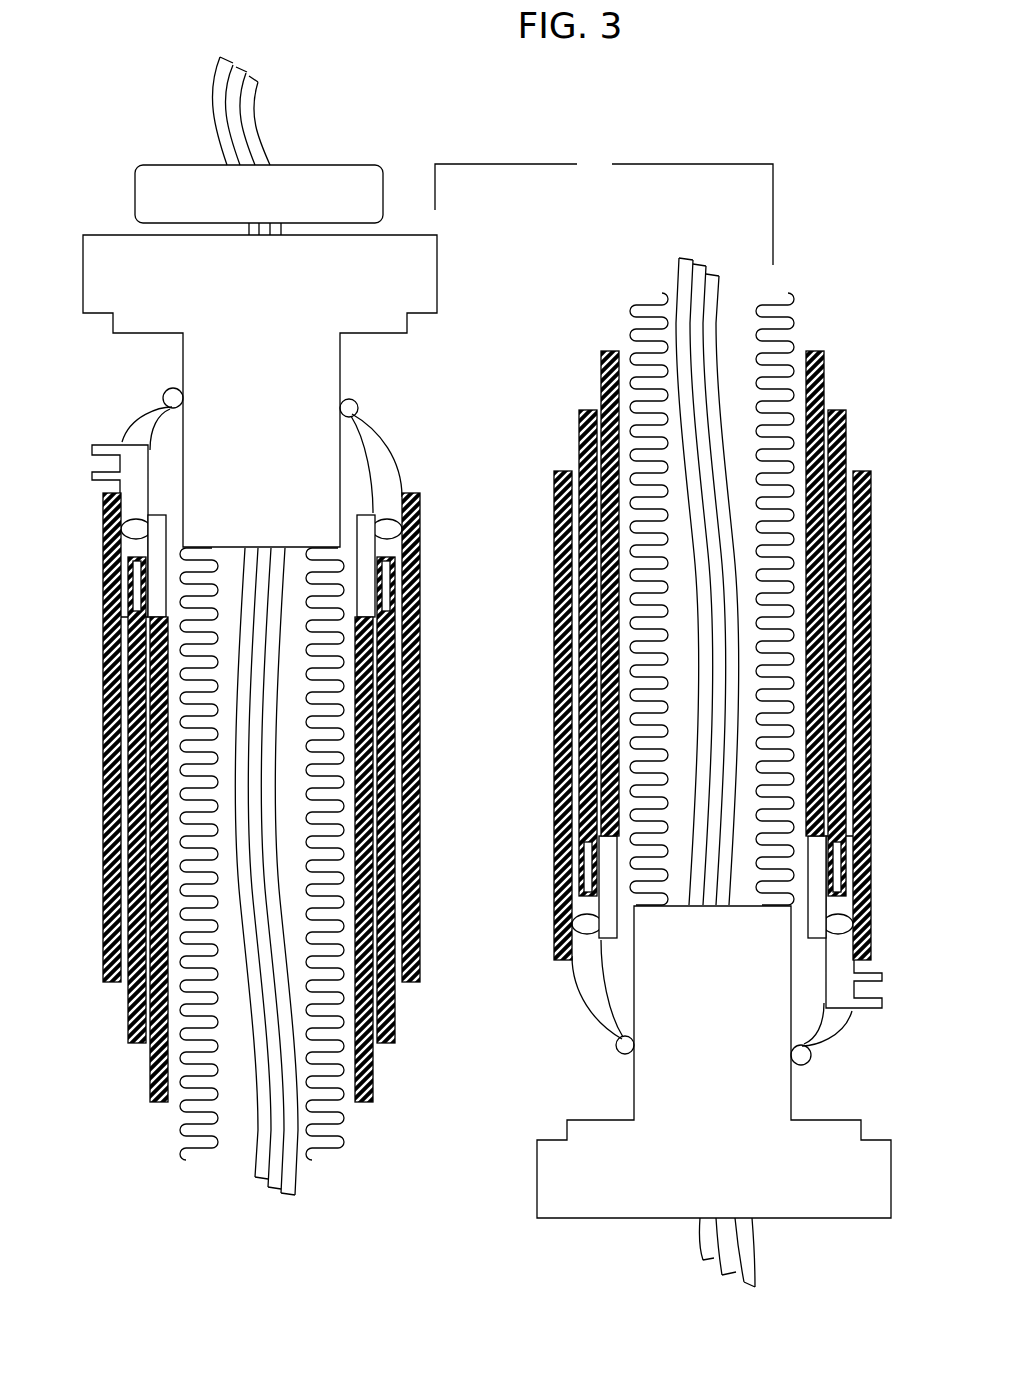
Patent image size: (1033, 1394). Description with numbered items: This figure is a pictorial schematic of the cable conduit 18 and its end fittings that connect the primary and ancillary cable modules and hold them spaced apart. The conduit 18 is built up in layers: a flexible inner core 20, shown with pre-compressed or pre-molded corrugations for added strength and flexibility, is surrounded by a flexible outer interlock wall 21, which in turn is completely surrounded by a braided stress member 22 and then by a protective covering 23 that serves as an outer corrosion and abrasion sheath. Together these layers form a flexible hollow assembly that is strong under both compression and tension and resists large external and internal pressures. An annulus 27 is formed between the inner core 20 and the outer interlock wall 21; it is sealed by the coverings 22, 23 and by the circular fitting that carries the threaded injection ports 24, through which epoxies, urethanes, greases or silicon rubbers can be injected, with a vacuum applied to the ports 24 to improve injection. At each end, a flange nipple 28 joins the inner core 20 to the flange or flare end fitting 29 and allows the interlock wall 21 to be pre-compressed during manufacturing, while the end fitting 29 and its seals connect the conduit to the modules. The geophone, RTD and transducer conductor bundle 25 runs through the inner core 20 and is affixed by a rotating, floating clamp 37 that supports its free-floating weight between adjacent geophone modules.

The cable conduit 18 is at (604, 209).
The inner core 20 is at (630, 313).
The outer interlock wall 21 is at (597, 372).
The braided stress member 22 is at (577, 433).
The protective covering 23 is at (552, 508).
The threaded injection ports 24 is at (96, 462).
The conductor bundle 25 is at (252, 122).
The annulus 27 is at (351, 458).
The flange nipple 28 is at (342, 363).
The end fitting 29 is at (438, 284).
The rotating floating clamp 37 is at (259, 200).